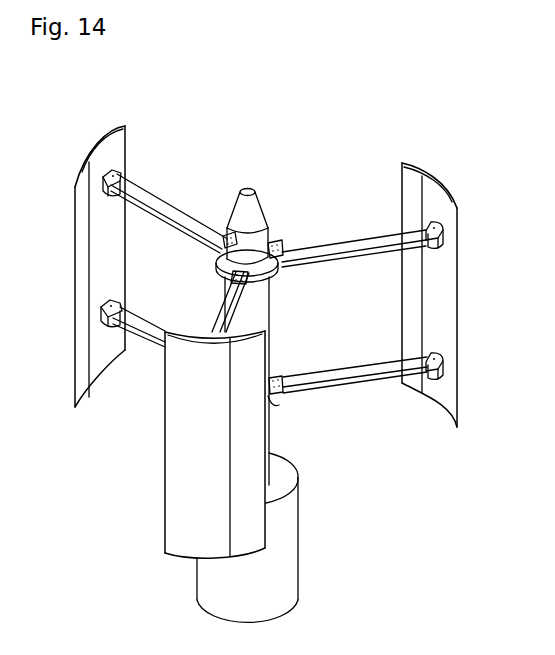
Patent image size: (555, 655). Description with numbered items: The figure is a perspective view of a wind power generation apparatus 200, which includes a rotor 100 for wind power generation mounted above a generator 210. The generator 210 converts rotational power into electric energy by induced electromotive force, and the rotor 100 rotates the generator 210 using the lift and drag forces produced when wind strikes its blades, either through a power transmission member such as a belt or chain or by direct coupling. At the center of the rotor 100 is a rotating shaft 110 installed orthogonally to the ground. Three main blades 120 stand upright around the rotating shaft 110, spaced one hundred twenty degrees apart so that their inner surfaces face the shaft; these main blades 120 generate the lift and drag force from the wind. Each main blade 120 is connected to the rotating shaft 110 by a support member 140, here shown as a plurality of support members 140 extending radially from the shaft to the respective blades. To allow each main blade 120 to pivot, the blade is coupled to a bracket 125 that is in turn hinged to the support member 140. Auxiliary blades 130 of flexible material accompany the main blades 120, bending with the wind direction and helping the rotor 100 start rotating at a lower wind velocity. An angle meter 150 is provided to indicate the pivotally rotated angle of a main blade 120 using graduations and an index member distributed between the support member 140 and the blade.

The wind power generation apparatus 200 is at (134, 98).
The rotor for wind power generation 100 is at (254, 183).
The rotating shaft 110 is at (257, 213).
The main blade 120 is at (118, 143).
The bracket 125 is at (426, 223).
The auxiliary blade 130 is at (82, 303).
The support member 140 is at (153, 200).
The angle meter 150 is at (123, 169).
The generator 210 is at (282, 548).